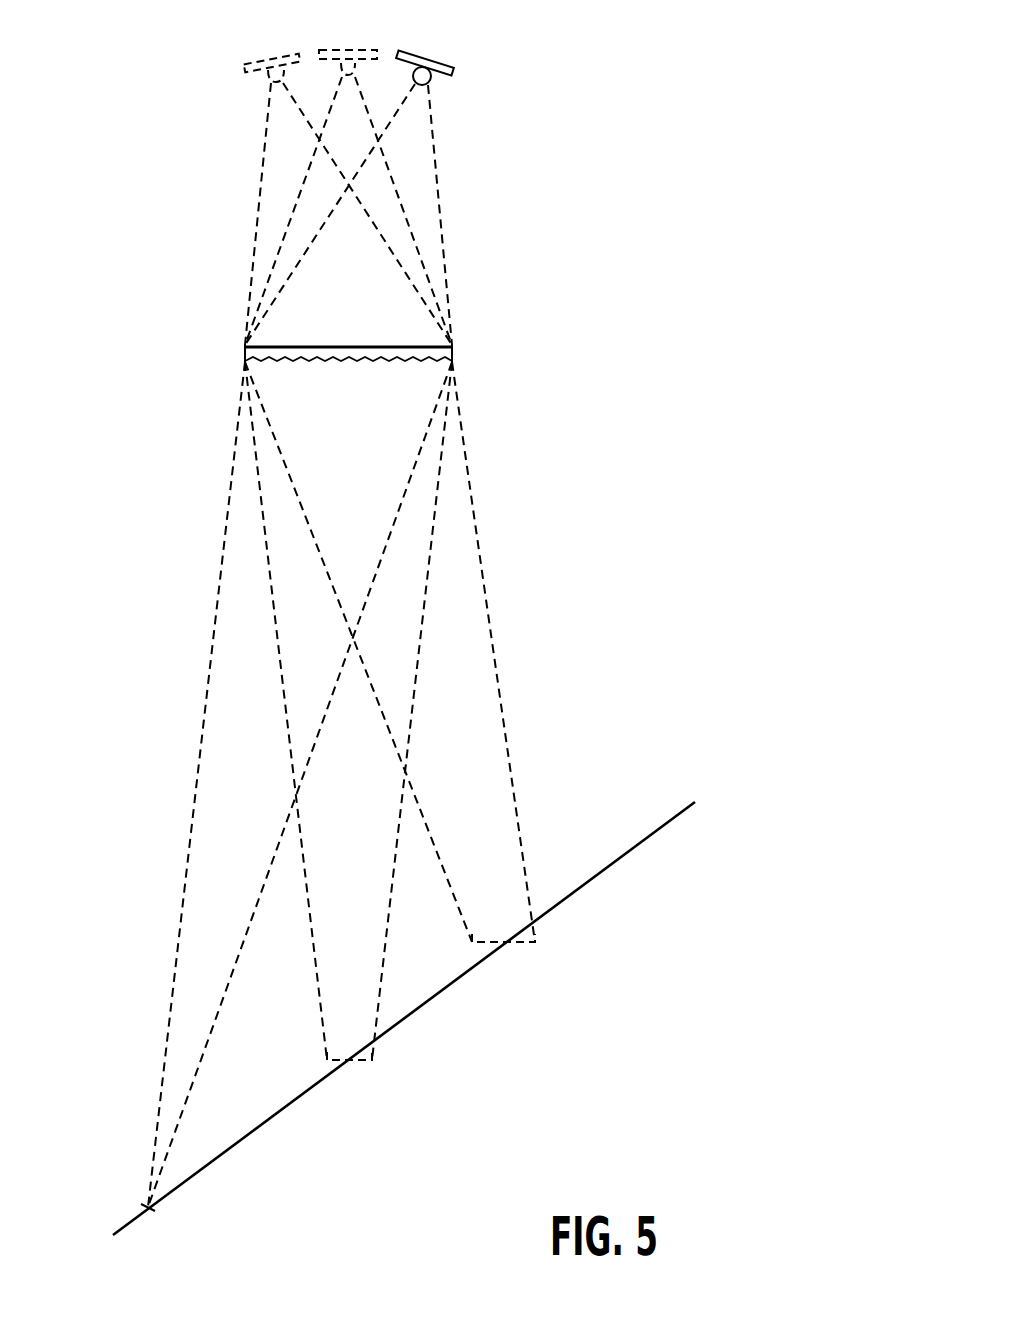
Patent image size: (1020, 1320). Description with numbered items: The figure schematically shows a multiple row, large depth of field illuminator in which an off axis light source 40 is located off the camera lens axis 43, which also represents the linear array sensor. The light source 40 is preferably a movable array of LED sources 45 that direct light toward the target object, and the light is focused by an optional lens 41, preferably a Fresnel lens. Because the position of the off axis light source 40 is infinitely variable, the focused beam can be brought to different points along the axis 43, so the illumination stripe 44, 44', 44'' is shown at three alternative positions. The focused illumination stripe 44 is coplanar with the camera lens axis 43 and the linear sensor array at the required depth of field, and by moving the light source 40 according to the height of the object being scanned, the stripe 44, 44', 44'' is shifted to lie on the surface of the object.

The off axis light source 40 is at (430, 58).
The LED sources 45 is at (431, 81).
The lens 41 is at (452, 351).
The camera lens axis 43 is at (633, 848).
The focused illumination stripe 44 is at (105, 1173).
The focused illumination stripe 44' is at (378, 1096).
The illumination stripe 44'' is at (541, 977).